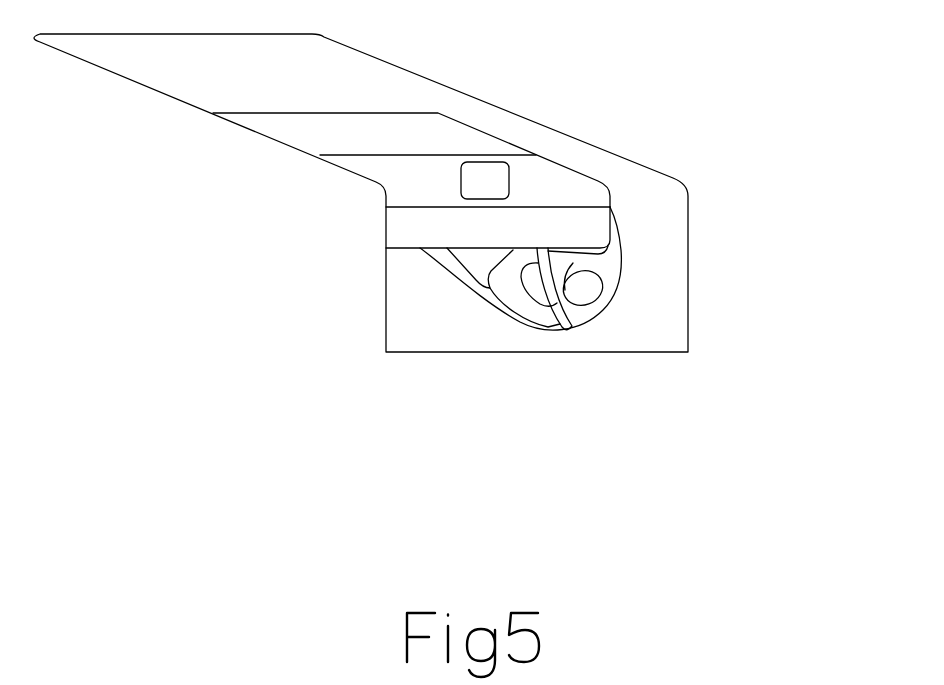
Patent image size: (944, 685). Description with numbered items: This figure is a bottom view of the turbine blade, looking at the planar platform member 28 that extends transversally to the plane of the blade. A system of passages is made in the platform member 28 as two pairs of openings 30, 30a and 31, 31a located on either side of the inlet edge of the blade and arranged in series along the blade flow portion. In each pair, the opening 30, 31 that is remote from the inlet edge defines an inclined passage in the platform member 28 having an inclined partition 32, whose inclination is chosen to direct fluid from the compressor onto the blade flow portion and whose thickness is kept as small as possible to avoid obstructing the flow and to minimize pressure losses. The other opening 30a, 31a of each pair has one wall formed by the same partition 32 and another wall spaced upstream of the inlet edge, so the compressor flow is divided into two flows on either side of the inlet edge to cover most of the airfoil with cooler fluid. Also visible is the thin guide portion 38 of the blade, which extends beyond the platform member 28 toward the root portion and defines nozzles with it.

The platform member 28 is at (663, 339).
The opening 30 is at (623, 267).
The opening 30a is at (593, 306).
The opening 31 is at (478, 263).
The opening 31a is at (530, 305).
The inclined partition 32 is at (340, 403).
The guide portion 38 is at (564, 328).